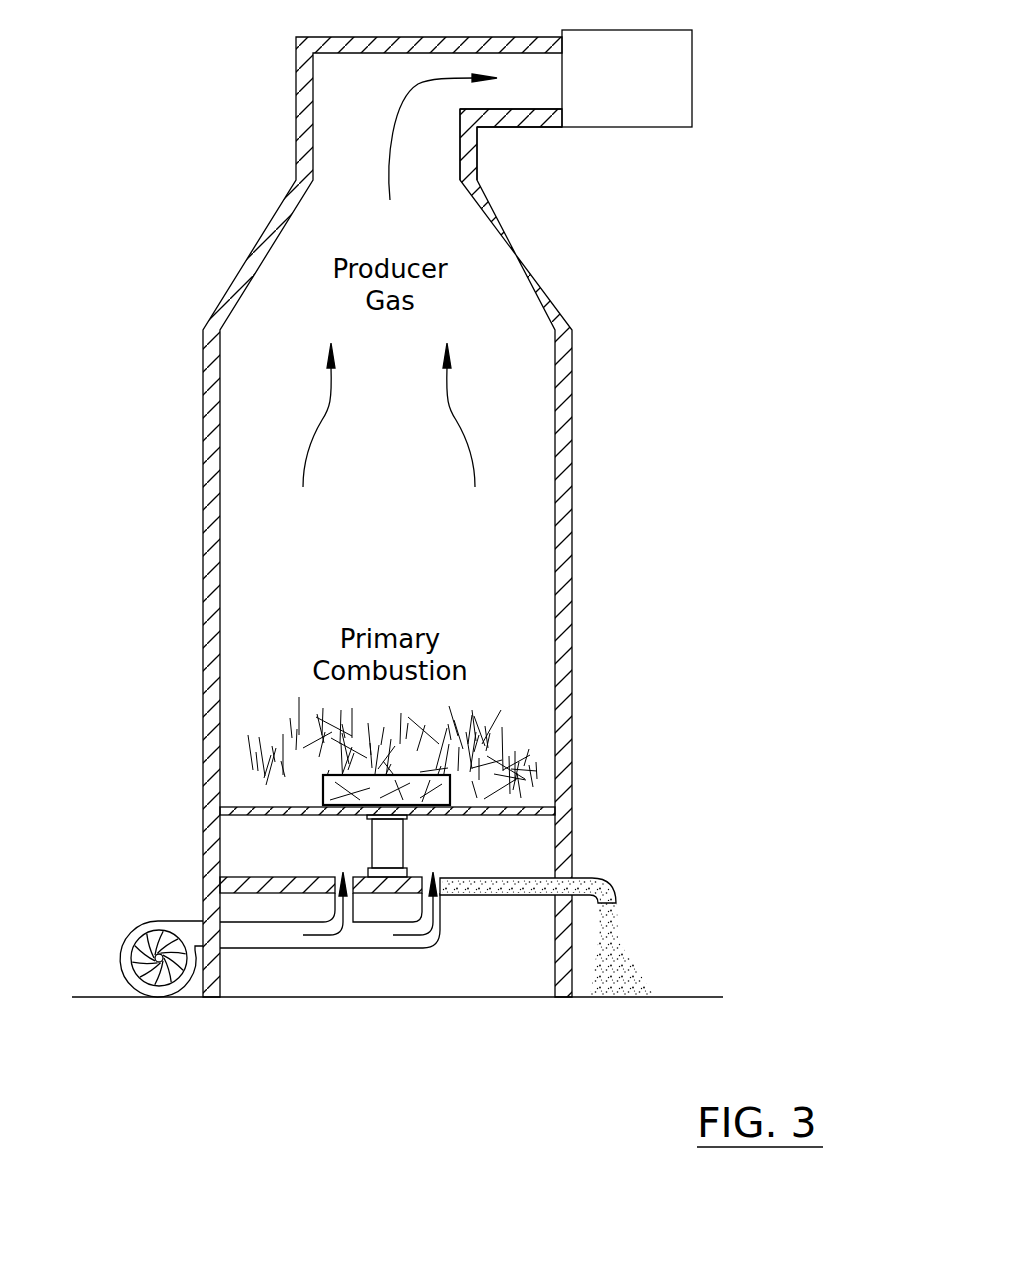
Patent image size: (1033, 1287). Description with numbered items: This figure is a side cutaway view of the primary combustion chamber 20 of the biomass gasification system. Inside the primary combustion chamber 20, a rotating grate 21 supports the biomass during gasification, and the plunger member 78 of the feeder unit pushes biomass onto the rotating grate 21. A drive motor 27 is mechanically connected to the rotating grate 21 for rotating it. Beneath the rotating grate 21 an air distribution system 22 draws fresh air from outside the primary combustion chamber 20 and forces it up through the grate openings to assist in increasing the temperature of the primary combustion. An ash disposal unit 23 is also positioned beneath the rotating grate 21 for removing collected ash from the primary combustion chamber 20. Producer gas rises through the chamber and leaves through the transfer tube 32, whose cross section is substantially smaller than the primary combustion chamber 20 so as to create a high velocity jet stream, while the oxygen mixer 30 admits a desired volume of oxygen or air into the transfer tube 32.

The primary combustion chamber 20 is at (572, 523).
The rotating grate 21 is at (500, 777).
The air distribution system 22 is at (155, 983).
The ash disposal unit 23 is at (592, 878).
The drive motor 27 is at (388, 858).
The oxygen mixer 30 is at (603, 97).
The transfer tube 32 is at (530, 120).
The plunger member 78 is at (345, 776).